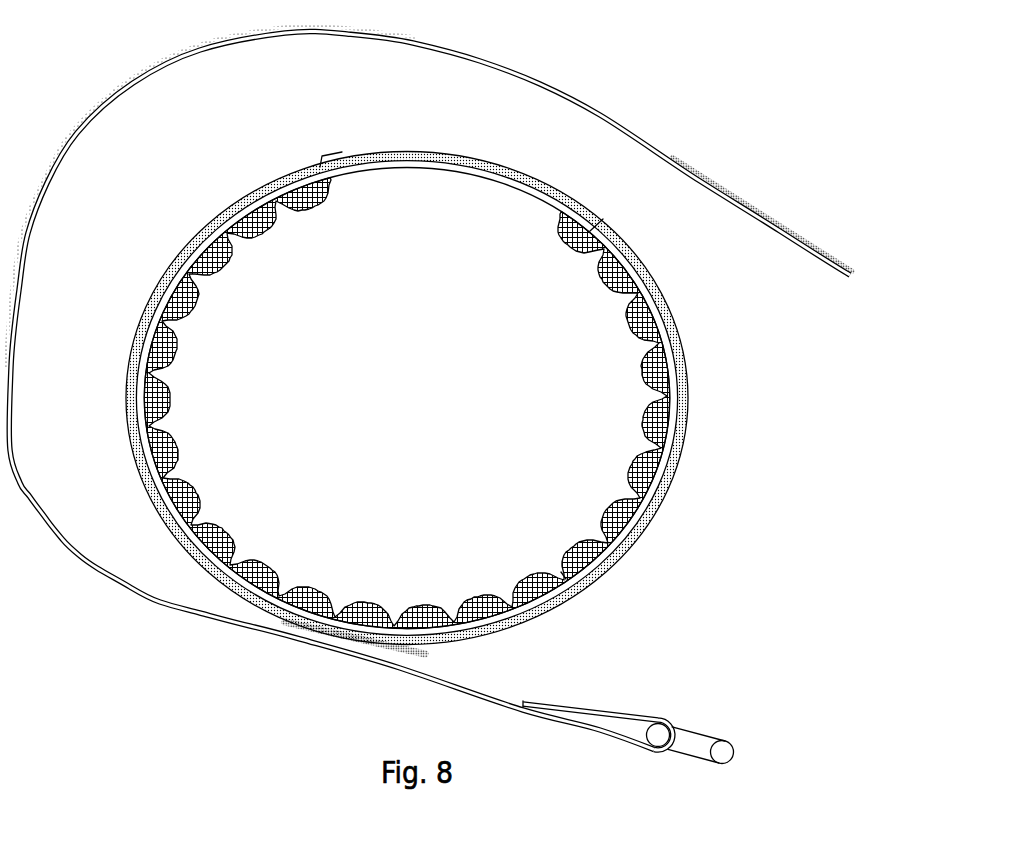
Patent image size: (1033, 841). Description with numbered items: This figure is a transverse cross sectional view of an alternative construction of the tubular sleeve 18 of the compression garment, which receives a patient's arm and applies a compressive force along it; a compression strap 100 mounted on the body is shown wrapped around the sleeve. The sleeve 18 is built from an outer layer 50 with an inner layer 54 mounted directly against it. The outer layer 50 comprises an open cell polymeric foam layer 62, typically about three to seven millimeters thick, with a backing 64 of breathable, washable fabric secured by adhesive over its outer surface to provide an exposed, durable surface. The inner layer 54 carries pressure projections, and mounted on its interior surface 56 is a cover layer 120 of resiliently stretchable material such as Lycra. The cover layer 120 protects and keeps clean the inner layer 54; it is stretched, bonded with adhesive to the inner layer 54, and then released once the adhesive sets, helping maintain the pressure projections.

The compression strap 100 is at (540, 83).
The tubular sleeve 18 is at (459, 398).
The outer layer 50 is at (459, 398).
The backing 64 is at (672, 318).
The open cell polymeric foam layer 62 is at (750, 270).
The interior surface 56 is at (605, 572).
The inner layer 54 is at (640, 467).
The cover layer 120 is at (563, 575).